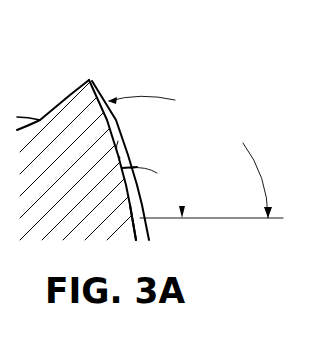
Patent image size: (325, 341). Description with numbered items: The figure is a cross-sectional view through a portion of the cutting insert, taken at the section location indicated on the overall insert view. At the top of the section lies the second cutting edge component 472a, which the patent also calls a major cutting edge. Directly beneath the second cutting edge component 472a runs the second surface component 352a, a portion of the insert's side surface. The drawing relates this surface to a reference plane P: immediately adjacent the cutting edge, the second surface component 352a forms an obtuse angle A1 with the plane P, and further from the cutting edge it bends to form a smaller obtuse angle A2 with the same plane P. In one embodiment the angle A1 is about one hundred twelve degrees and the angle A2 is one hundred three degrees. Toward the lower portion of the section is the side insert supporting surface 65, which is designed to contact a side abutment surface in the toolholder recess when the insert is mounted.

The second cutting edge component 472a is at (86, 79).
The second surface component 352a is at (100, 88).
The side insert supporting surface 65 is at (140, 204).
The plane P is at (213, 218).
The obtuse angle A1 is at (190, 157).
The smaller obtuse angle A2 is at (165, 169).